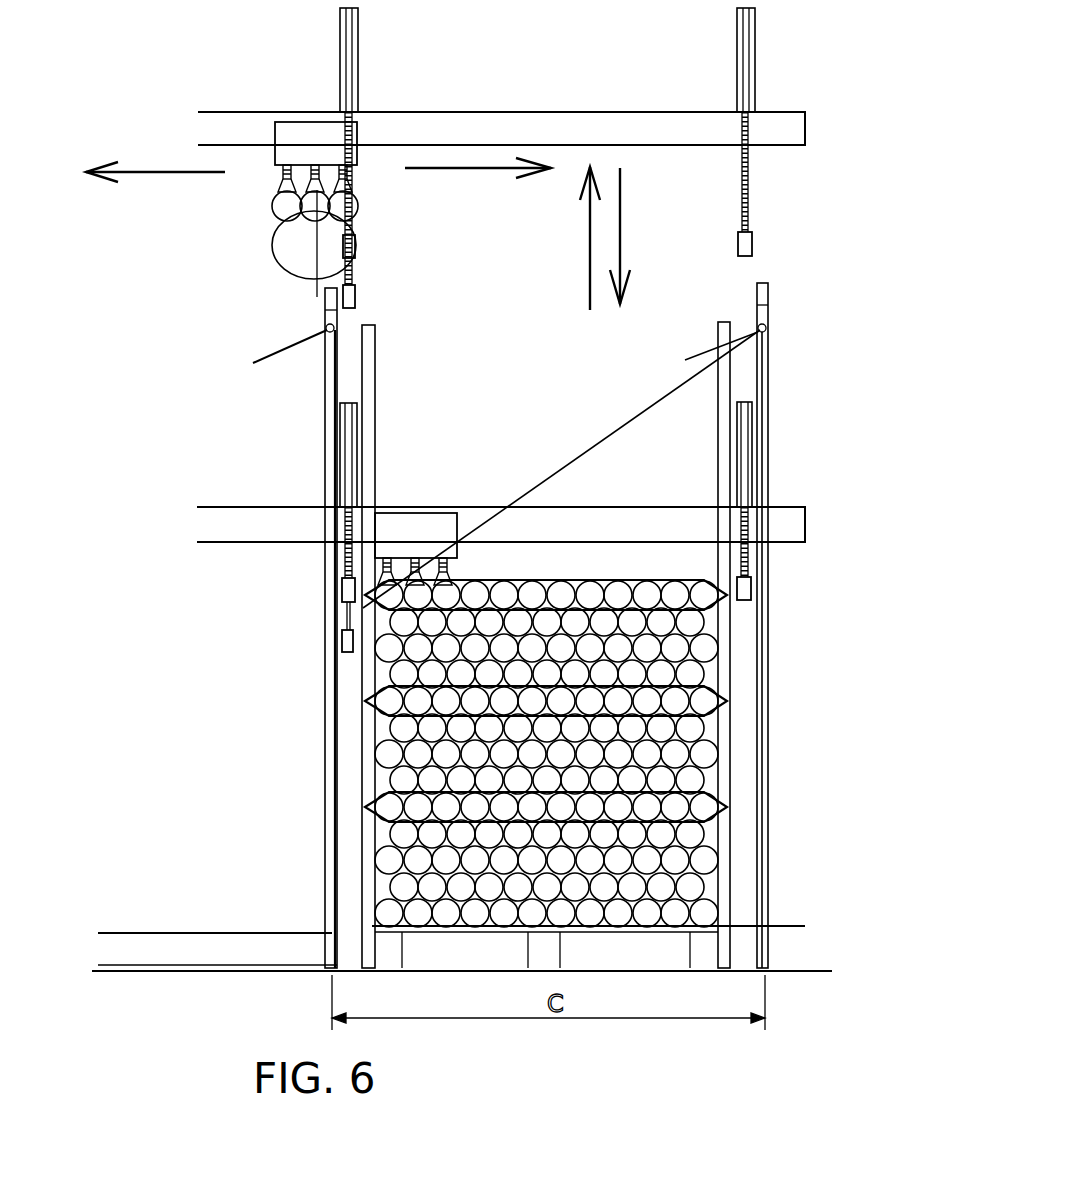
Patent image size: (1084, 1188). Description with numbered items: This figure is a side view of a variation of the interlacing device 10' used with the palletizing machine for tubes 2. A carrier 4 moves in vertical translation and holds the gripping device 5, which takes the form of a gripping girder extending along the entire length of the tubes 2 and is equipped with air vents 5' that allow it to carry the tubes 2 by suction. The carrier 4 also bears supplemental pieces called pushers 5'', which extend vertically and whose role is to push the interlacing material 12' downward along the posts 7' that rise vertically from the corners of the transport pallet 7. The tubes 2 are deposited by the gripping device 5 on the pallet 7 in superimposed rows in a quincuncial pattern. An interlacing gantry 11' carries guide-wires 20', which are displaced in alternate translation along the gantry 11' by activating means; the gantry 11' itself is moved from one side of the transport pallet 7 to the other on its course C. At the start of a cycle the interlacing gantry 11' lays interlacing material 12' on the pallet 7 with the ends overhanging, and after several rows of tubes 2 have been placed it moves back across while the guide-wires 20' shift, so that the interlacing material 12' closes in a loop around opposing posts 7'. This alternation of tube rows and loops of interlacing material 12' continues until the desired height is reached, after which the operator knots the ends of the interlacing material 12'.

The tubes 2 is at (293, 241).
The carrier 4 is at (320, 112).
The gripping device 5 is at (305, 351).
The air vents 5' is at (301, 375).
The pushers 5'' is at (497, 392).
The transport pallet 7 is at (600, 890).
The posts 7' is at (495, 645).
The interlacing device 10' is at (503, 626).
The interlacing gantry 11' is at (496, 611).
The interlacing material 12' is at (473, 648).
The guide-wires 20' is at (496, 358).